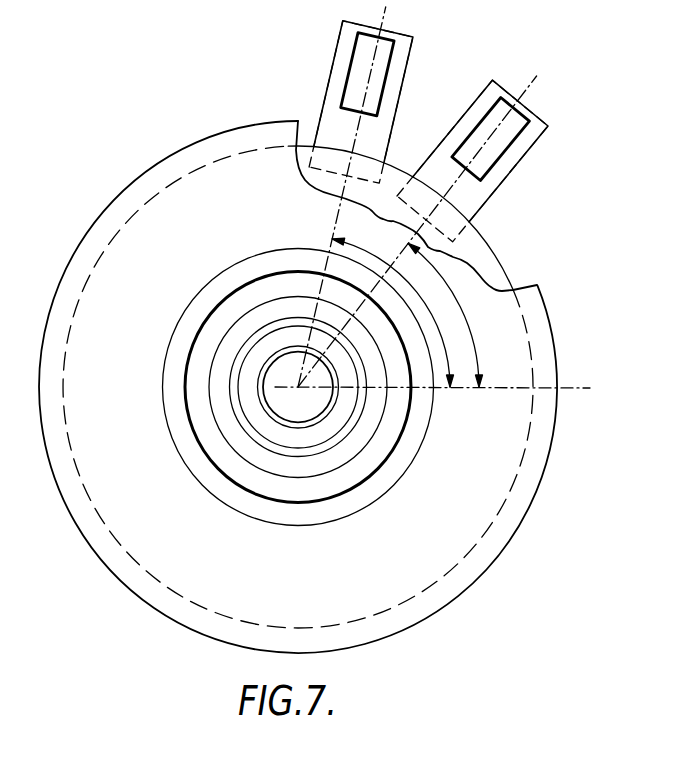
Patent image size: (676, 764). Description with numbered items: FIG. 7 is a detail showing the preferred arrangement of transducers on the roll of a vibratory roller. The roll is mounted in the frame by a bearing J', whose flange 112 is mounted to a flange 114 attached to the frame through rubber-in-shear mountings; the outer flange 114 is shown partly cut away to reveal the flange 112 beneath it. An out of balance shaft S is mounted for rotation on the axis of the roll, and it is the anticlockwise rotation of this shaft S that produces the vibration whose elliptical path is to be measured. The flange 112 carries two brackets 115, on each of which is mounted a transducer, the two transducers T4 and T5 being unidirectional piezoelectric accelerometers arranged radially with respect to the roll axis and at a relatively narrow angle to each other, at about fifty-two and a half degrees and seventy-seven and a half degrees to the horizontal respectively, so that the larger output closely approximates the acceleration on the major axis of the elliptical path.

The flange 114 is at (197, 140).
The flange 112 is at (493, 253).
The bracket 115 is at (323, 107).
The transducer T4 is at (352, 59).
The transducer T5 is at (503, 140).
The bearing J' is at (270, 387).
The out of balance shaft S is at (273, 400).